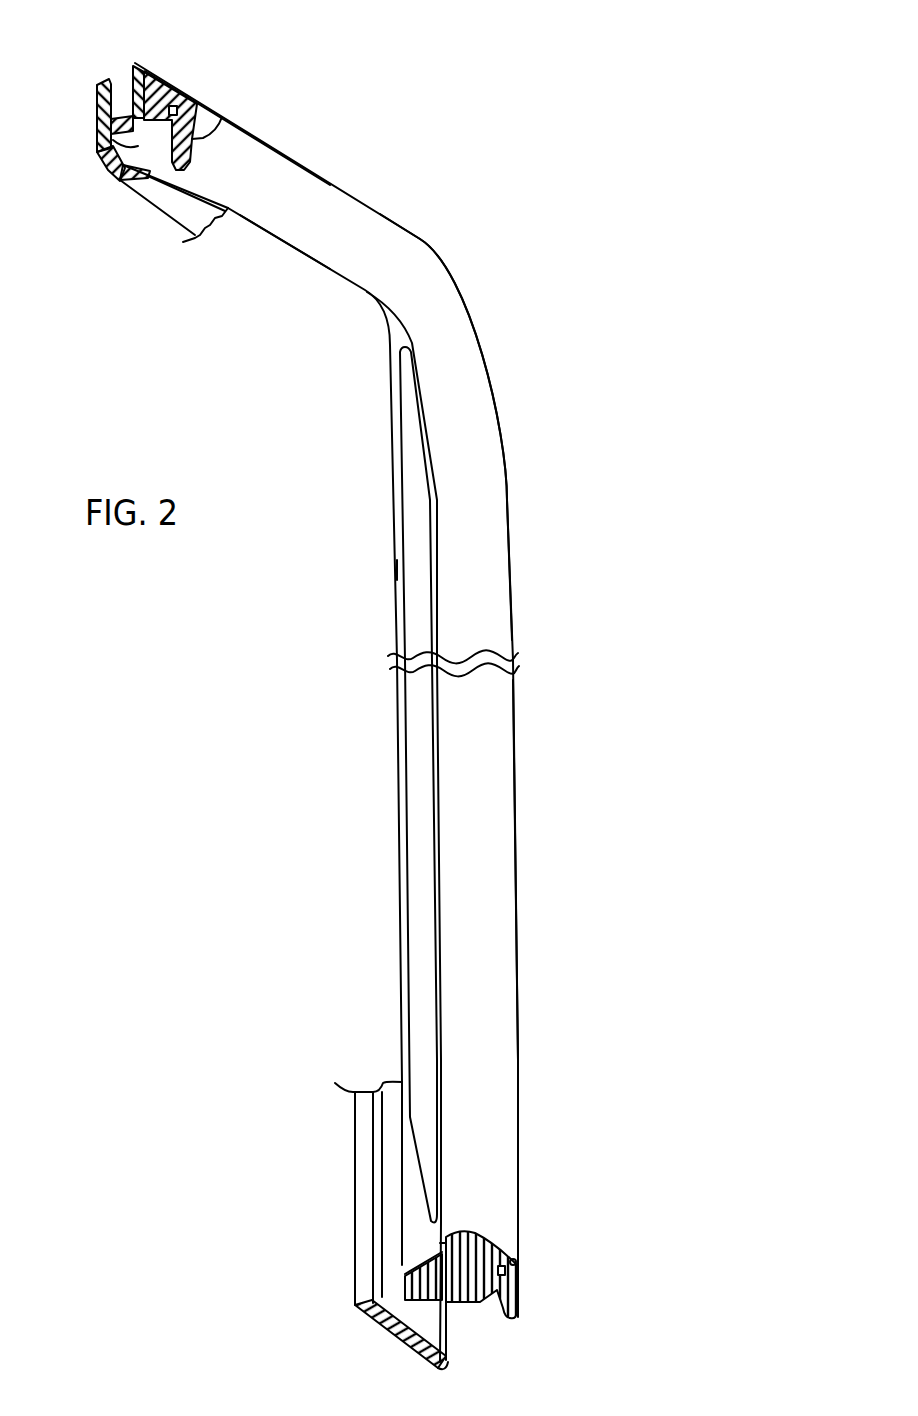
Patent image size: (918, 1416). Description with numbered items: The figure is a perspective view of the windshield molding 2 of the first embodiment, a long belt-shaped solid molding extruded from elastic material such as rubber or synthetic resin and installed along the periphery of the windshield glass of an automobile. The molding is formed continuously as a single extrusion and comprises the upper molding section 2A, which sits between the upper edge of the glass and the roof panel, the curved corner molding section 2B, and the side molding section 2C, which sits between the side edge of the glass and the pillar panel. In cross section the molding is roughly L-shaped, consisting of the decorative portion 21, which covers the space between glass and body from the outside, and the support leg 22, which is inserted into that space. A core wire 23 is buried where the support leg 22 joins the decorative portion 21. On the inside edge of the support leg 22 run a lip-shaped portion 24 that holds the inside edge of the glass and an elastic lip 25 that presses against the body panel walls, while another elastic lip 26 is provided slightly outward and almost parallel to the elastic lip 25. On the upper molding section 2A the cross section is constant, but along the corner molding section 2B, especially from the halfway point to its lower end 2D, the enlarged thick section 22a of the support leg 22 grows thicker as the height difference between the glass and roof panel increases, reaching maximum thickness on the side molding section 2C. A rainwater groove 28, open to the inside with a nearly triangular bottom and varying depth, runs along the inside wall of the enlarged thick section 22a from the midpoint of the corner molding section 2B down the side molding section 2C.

The windshield molding 2 is at (533, 603).
The upper molding section 2A is at (288, 178).
The corner molding section 2B is at (452, 316).
The side molding section 2C is at (495, 991).
The lower end of corner molding section 2D is at (479, 485).
The decorative portion 21 is at (203, 140).
The support leg 22 is at (108, 147).
The enlarged thick section 22a is at (398, 565).
The wire 23 is at (174, 96).
The lip-shaped portion 24 is at (113, 178).
The elastic lip 25 is at (97, 104).
The elastic lip 26 is at (150, 70).
The rainwater groove 28 is at (420, 762).